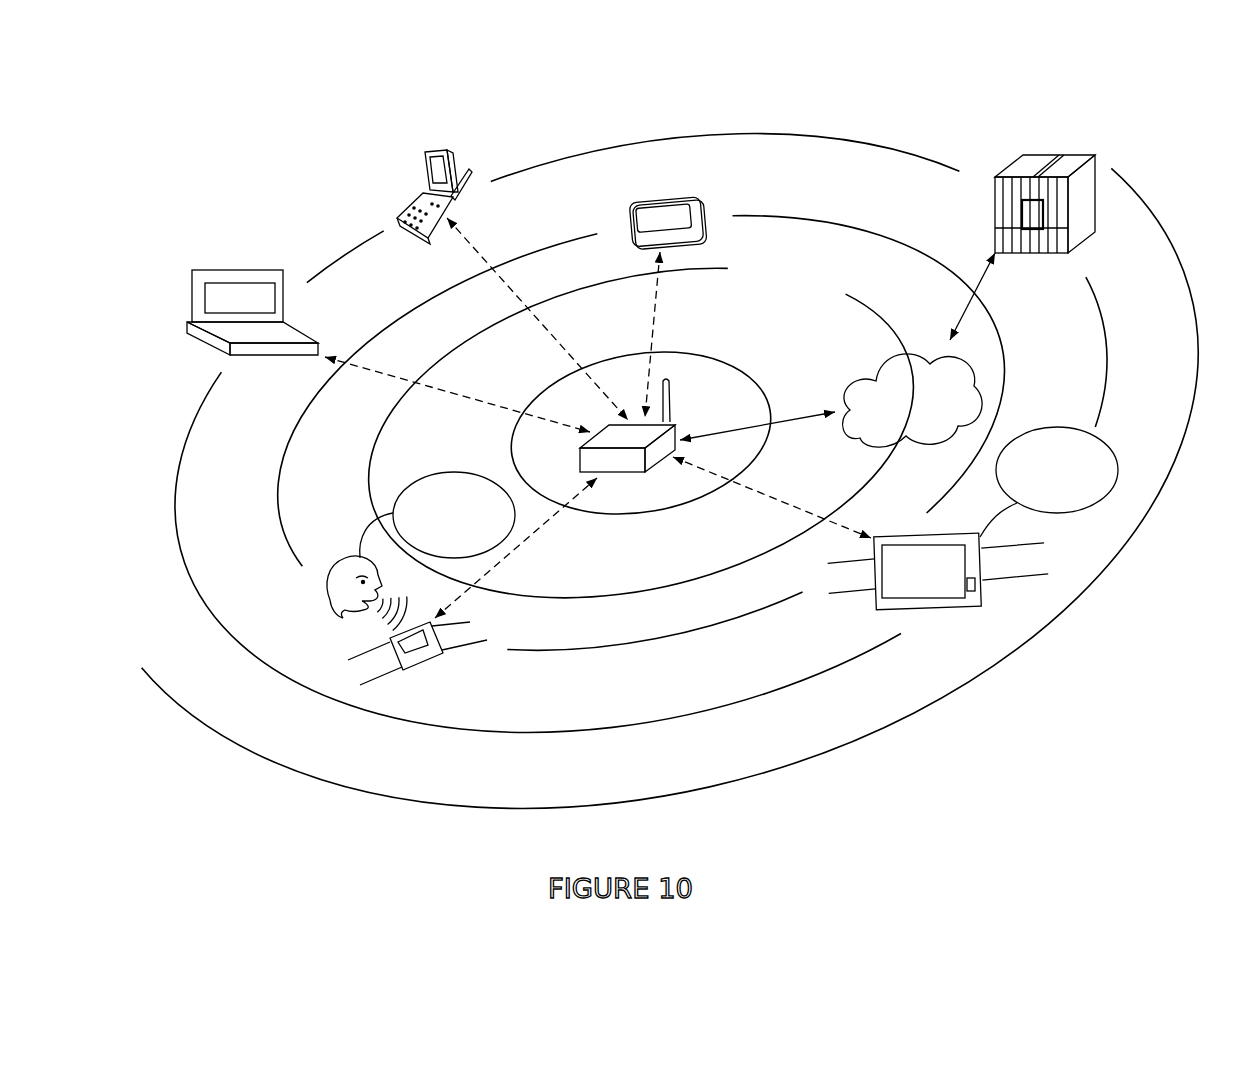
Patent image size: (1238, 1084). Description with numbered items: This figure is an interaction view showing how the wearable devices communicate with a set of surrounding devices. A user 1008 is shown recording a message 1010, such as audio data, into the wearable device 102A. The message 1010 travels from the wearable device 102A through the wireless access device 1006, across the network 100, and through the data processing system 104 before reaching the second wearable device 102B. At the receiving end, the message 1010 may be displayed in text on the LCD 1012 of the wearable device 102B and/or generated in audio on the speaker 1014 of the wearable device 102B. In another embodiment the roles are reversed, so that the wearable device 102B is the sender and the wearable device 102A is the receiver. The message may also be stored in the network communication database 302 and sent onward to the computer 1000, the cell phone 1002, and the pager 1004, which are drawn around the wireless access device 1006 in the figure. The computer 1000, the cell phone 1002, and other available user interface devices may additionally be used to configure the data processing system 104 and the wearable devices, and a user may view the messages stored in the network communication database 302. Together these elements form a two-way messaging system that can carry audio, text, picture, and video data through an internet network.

The computer 1000 is at (218, 352).
The cell phone 1002 is at (413, 203).
The pager 1004 is at (669, 198).
The wireless access device 1006 is at (680, 424).
The network 100 is at (897, 432).
The data processing system 104 is at (1033, 157).
The network communication database 302 is at (1022, 212).
The user 1008 is at (327, 582).
The message 1010 is at (452, 472).
The wearable device 102A is at (420, 658).
The wearable device 102B is at (982, 624).
The LCD 1012 is at (888, 545).
The speaker 1014 is at (1006, 601).